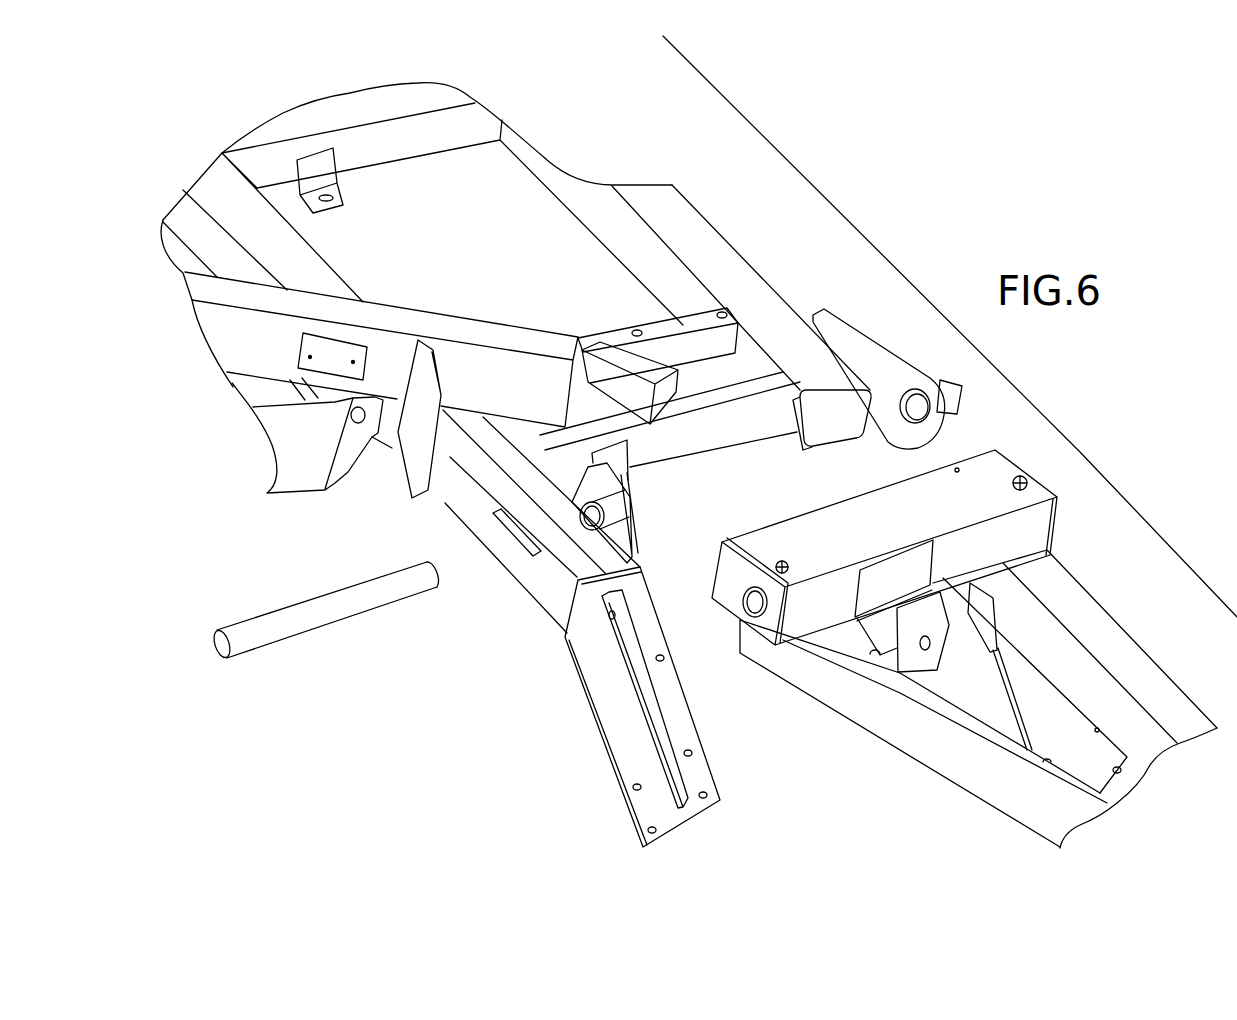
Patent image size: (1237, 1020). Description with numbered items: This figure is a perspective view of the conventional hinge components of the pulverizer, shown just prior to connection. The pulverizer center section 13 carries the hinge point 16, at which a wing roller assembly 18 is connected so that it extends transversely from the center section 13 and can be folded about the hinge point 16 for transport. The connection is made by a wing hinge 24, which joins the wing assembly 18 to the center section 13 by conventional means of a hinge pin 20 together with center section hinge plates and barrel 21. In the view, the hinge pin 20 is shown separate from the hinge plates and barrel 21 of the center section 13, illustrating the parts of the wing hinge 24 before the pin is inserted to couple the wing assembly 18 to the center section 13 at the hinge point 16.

The center section 13 is at (530, 315).
The hinge point 16 is at (610, 510).
The wing roller assembly 18 is at (1133, 640).
The hinge pin 20 is at (325, 610).
The center section hinge plates and barrel 21 is at (627, 533).
The wing hinge 24 is at (856, 543).